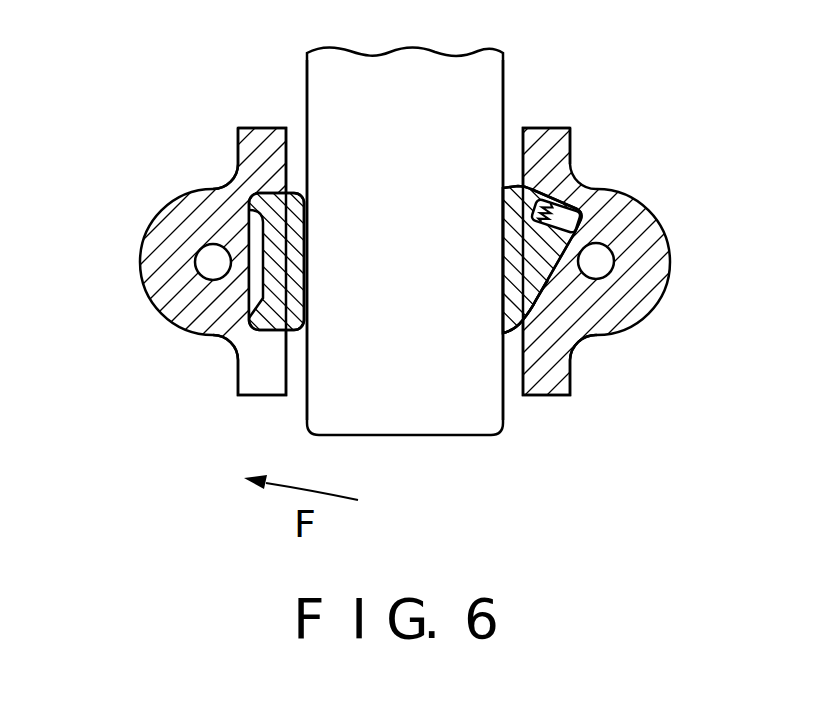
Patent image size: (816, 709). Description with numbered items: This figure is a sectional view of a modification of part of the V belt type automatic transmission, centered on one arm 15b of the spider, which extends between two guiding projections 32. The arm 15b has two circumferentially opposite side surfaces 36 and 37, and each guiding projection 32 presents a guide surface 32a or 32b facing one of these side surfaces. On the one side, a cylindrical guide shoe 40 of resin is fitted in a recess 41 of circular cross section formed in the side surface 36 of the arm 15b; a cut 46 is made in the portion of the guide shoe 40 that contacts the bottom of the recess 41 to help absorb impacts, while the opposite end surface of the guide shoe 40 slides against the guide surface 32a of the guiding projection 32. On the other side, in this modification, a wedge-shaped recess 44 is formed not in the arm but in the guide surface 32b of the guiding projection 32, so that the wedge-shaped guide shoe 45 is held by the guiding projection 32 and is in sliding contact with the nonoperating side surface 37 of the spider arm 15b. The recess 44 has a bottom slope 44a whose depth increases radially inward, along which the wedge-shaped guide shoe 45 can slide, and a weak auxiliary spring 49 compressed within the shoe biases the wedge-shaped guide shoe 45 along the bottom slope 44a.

The arm 15b is at (418, 420).
The guiding projection 32 is at (150, 257).
The guide surface 32a is at (254, 396).
The guide surface 32b is at (553, 394).
The side surface 36 is at (307, 103).
The side surface 37 is at (506, 96).
The cylindrical guide shoe 40 is at (303, 249).
The recess 41 is at (213, 337).
The wedge-shaped recess 44 is at (523, 251).
The bottom slope 44a is at (582, 334).
The wedge-shaped guide shoe 45 is at (512, 289).
The cut 46 is at (248, 215).
The auxiliary spring 49 is at (578, 204).